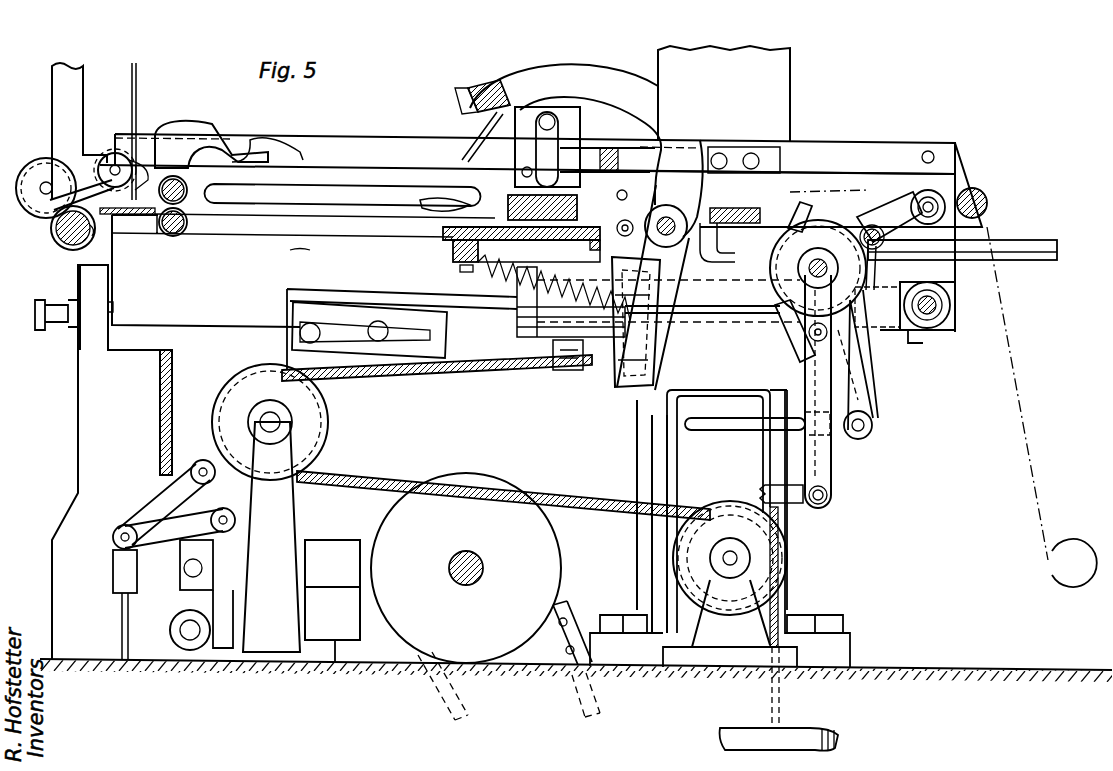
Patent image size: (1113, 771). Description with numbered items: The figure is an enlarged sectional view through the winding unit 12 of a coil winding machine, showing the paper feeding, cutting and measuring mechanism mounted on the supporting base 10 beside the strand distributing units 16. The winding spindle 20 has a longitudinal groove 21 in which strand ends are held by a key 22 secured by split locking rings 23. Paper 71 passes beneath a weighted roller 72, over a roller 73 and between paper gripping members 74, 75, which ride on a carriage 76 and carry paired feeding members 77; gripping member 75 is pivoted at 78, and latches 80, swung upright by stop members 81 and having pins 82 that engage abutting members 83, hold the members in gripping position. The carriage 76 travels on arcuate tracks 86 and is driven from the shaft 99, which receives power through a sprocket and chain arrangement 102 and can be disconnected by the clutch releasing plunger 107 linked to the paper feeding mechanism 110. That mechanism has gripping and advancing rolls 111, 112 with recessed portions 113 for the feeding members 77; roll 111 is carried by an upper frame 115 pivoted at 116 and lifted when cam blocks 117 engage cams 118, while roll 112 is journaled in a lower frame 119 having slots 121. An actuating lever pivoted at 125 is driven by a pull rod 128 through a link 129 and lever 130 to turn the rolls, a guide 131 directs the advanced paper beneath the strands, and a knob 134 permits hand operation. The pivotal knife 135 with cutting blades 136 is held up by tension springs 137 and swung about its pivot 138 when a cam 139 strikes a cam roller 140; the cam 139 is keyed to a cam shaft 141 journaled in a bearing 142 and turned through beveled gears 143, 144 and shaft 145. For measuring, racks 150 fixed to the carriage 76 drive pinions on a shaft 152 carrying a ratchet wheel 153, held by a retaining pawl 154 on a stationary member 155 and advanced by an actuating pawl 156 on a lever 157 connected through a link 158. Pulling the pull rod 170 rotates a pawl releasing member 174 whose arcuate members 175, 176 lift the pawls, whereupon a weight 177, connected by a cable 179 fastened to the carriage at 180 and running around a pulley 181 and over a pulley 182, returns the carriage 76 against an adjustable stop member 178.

The supporting base 10 is at (868, 666).
The winding unit 12 is at (391, 134).
The strand guiding or distributing units 16 is at (62, 97).
The winding spindle 20 is at (72, 250).
The longitudinally extending groove 21 is at (110, 232).
The key 22 is at (108, 282).
The split locking rings 23 is at (56, 246).
The paper 71 is at (1032, 390).
The weighted roller 72 is at (1052, 566).
The roller 73 is at (985, 203).
The paper gripping member 74 is at (562, 245).
The paper gripping member 75 is at (512, 240).
The carriage 76 is at (450, 245).
The feeding members 77 is at (440, 203).
The pivot 78 is at (618, 184).
The latches 80 is at (565, 112).
The stop members 81 is at (580, 150).
The pins 82 is at (505, 90).
The abutting members 83 is at (262, 152).
The arcuate shaped tracks 86 is at (470, 362).
The shaft 99 is at (480, 558).
The sprocket and chain arrangement 102 is at (575, 606).
The clutch releasing plunger 107 is at (318, 546).
The paper feeding mechanism 110 is at (132, 476).
The gripping and advancing roll 111 is at (140, 140).
The gripping and advancing roll 112 is at (180, 237).
The recessed portions 113 is at (188, 212).
The upper frame 115 is at (342, 135).
The pivot 116 is at (928, 151).
The cam blocks 117 is at (505, 138).
The cams 118 is at (300, 150).
The lower frame 119 is at (214, 318).
The longitudinally extending slots 121 is at (312, 236).
The pivot 125 is at (212, 624).
The pull rod 128 is at (122, 618).
The link 129 is at (150, 490).
The lever 130 is at (218, 500).
The guide 131 is at (118, 152).
The knob or handle 134 is at (60, 325).
The pivotal knife 135 is at (548, 72).
The cutting blades 136 is at (455, 148).
The tension springs 137 is at (492, 300).
The pivot 138 is at (672, 262).
The cam 139 is at (664, 312).
The cam roller 140 is at (664, 346).
The cam shaft 141 is at (745, 315).
The bearing 142 is at (860, 352).
The beveled gear 143 is at (912, 343).
The beveled gear 144 is at (945, 316).
The shaft 145 is at (936, 305).
The racks 150 is at (1015, 240).
The shaft 152 is at (810, 270).
The ratchet wheel 153 is at (802, 206).
The retaining pawl 154 is at (878, 284).
The stationary member 155 is at (925, 193).
The actuating pawl 156 is at (780, 340).
The lever 157 is at (835, 462).
The link 158 is at (762, 485).
The pull rod 170 is at (698, 432).
The pawl releasing member 174 is at (872, 380).
The pawl engaging member 175 is at (860, 232).
The pawl engaging member 176 is at (808, 332).
The weight 177 is at (835, 726).
The adjustable stop member 178 is at (306, 250).
The cable 179 is at (540, 492).
The cable attachment point 180 is at (565, 375).
The pulley 181 is at (326, 438).
The pulley 182 is at (782, 556).